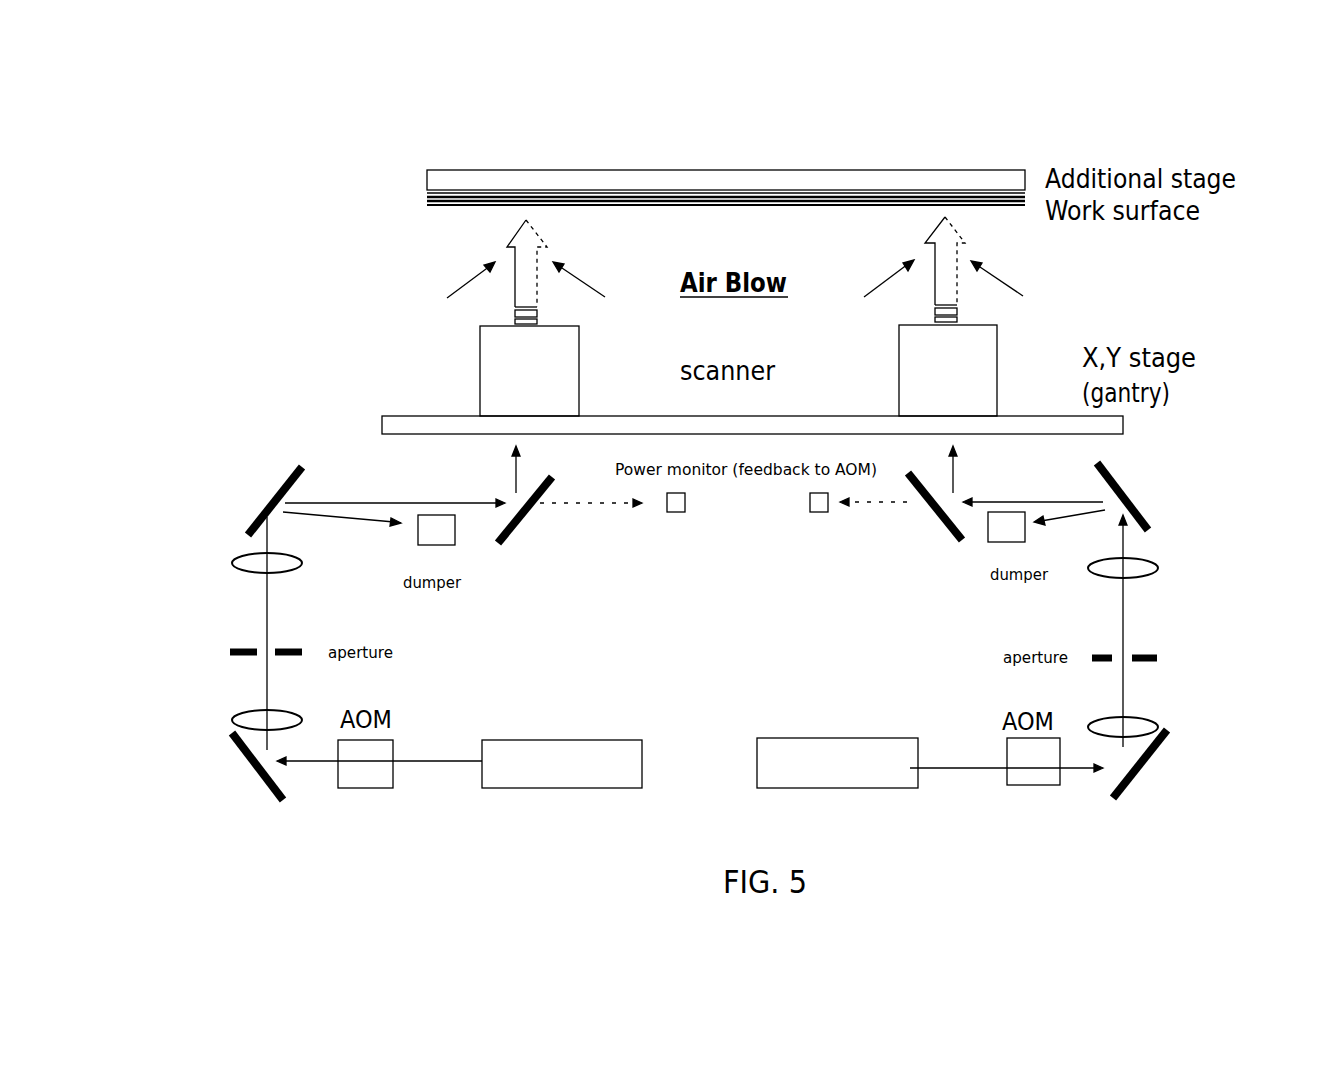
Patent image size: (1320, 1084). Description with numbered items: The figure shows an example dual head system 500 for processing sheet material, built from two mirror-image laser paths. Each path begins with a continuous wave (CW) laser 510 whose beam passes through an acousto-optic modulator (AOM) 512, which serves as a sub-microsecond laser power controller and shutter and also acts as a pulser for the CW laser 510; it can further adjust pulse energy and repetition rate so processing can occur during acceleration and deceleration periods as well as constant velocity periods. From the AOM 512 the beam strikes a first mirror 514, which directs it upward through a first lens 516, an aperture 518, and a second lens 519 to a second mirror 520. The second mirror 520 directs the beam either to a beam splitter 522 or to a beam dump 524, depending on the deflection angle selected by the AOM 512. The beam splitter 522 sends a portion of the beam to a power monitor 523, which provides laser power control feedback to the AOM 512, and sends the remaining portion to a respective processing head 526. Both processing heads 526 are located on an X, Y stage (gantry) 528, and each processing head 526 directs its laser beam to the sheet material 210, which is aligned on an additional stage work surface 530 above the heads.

The dual head system 500 is at (398, 155).
The sheet material 210 is at (432, 205).
The additional stage work surface 530 is at (1025, 171).
The processing head 526 is at (480, 370).
The X, Y stage (gantry) 528 is at (1124, 431).
The second mirror 520 is at (276, 495).
The beam splitter 522 is at (518, 520).
The power monitor 523 is at (676, 512).
The beam dump 524 is at (418, 540).
The second lens 519 is at (238, 560).
The aperture 518 is at (240, 645).
The first lens 516 is at (234, 718).
The first mirror 514 is at (262, 775).
The acousto-optic modulator (AOM) 512 is at (360, 788).
The continuous wave (CW) laser 510 is at (573, 788).